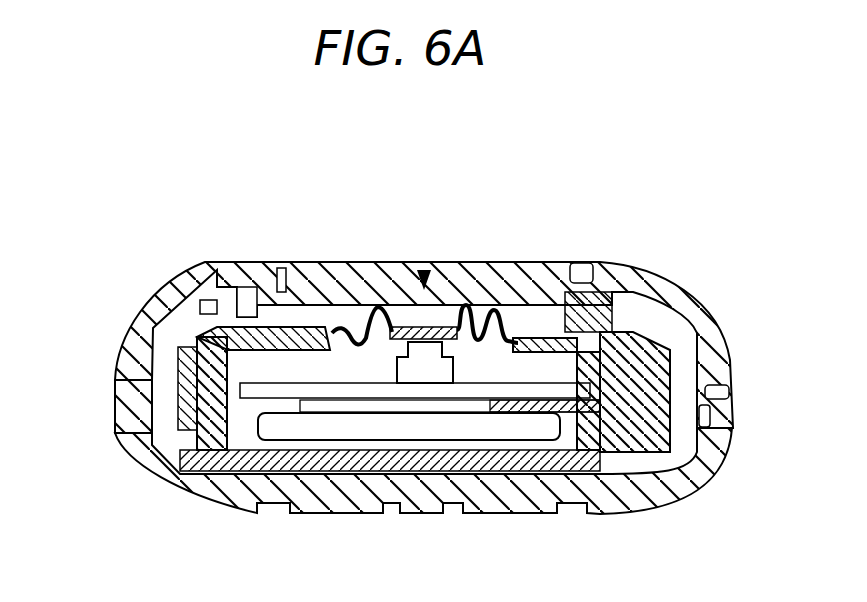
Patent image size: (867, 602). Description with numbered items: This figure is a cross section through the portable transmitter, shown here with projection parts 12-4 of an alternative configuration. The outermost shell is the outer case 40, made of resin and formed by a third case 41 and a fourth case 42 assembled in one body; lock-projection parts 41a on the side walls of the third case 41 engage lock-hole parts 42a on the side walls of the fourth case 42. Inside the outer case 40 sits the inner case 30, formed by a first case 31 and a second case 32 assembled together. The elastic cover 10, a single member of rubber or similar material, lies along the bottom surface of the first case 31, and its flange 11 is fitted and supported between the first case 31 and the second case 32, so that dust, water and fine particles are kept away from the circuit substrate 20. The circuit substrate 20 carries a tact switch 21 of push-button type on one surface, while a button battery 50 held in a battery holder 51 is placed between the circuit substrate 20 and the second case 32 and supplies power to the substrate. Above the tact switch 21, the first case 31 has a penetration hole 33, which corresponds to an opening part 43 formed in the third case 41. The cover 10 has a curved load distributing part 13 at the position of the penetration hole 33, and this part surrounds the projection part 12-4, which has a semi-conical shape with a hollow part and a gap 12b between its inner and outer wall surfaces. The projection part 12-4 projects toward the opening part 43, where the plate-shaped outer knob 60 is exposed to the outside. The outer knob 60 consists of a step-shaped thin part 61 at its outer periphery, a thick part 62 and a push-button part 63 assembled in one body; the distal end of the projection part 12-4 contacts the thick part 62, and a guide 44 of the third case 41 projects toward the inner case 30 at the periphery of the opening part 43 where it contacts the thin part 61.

The cover 10 is at (633, 292).
The flange 11 is at (645, 410).
The projection part 12-4 is at (386, 305).
The gap 12b is at (401, 305).
The load distributing part 13 is at (324, 333).
The circuit substrate 20 is at (290, 400).
The tact switch 21 is at (243, 285).
The inner case 30 is at (56, 413).
The first case 31 is at (205, 395).
The second case 32 is at (210, 495).
The penetration hole 33 is at (494, 283).
The outer case 40 is at (56, 326).
The third case 41 is at (128, 347).
The lock-projection part 41a is at (733, 404).
The fourth case 42 is at (125, 391).
The lock-hole part 42a is at (733, 427).
The opening part 43 is at (285, 262).
The guide 44 is at (220, 312).
The button battery 50 is at (430, 420).
The battery holder 51 is at (592, 425).
The outer knob 60 is at (422, 272).
The thin part 61 is at (585, 264).
The thick part 62 is at (513, 281).
The push-button part 63 is at (430, 304).